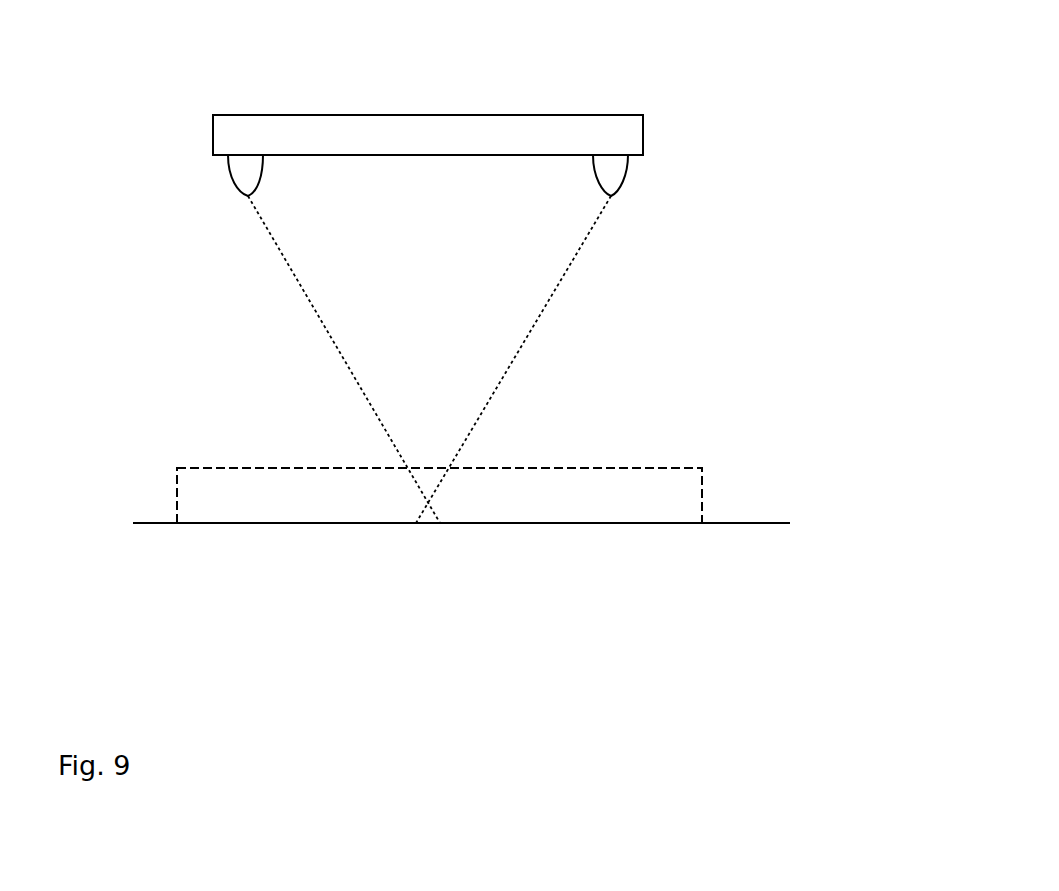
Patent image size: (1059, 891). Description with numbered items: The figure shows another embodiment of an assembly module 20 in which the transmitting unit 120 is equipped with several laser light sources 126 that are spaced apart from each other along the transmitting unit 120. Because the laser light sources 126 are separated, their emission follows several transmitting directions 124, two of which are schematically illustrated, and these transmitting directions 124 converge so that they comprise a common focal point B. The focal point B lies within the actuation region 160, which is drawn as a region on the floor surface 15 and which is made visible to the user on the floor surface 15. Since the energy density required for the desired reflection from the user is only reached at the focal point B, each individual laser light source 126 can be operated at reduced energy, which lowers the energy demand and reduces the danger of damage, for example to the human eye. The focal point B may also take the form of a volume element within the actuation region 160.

The assembly module 20 is at (448, 126).
The transmitting unit 120 is at (637, 114).
The laser light source 126 is at (233, 176).
The transmitting direction 124 is at (295, 275).
The focal point B is at (429, 480).
The actuation region 160 is at (686, 444).
The floor surface 15 is at (777, 523).